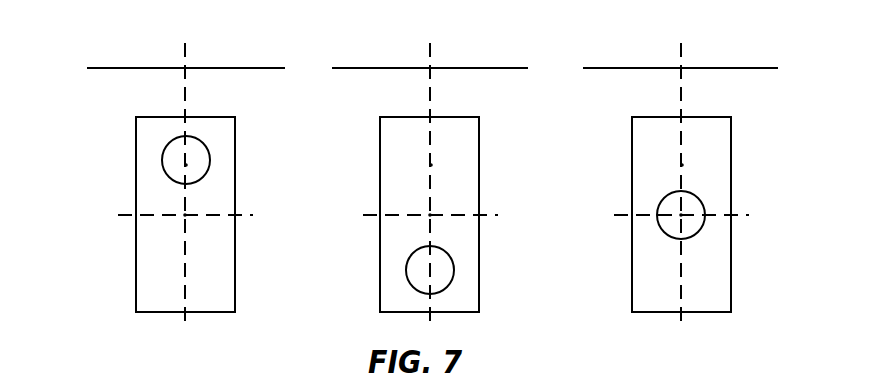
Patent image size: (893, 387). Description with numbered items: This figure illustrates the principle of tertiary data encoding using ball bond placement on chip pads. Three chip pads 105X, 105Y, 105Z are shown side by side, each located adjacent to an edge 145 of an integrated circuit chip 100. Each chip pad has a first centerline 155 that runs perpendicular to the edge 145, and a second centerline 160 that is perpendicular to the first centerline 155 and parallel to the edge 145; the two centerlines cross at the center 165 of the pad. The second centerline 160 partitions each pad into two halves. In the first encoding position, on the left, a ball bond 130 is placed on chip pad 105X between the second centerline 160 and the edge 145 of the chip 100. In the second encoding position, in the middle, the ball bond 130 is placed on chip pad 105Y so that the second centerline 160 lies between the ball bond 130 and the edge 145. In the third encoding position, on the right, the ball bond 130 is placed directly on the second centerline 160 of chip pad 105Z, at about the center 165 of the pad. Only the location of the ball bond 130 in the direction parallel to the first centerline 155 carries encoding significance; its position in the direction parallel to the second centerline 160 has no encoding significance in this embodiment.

The edge 145 is at (107, 67).
The integrated circuit chip 100 is at (161, 101).
The ball bond 130 is at (197, 147).
The first centerline 155 is at (187, 165).
The center 165 is at (185, 213).
The second centerline 160 is at (123, 213).
The chip pad 105X is at (148, 277).
The chip pad 105Y is at (398, 277).
The chip pad 105Z is at (645, 277).